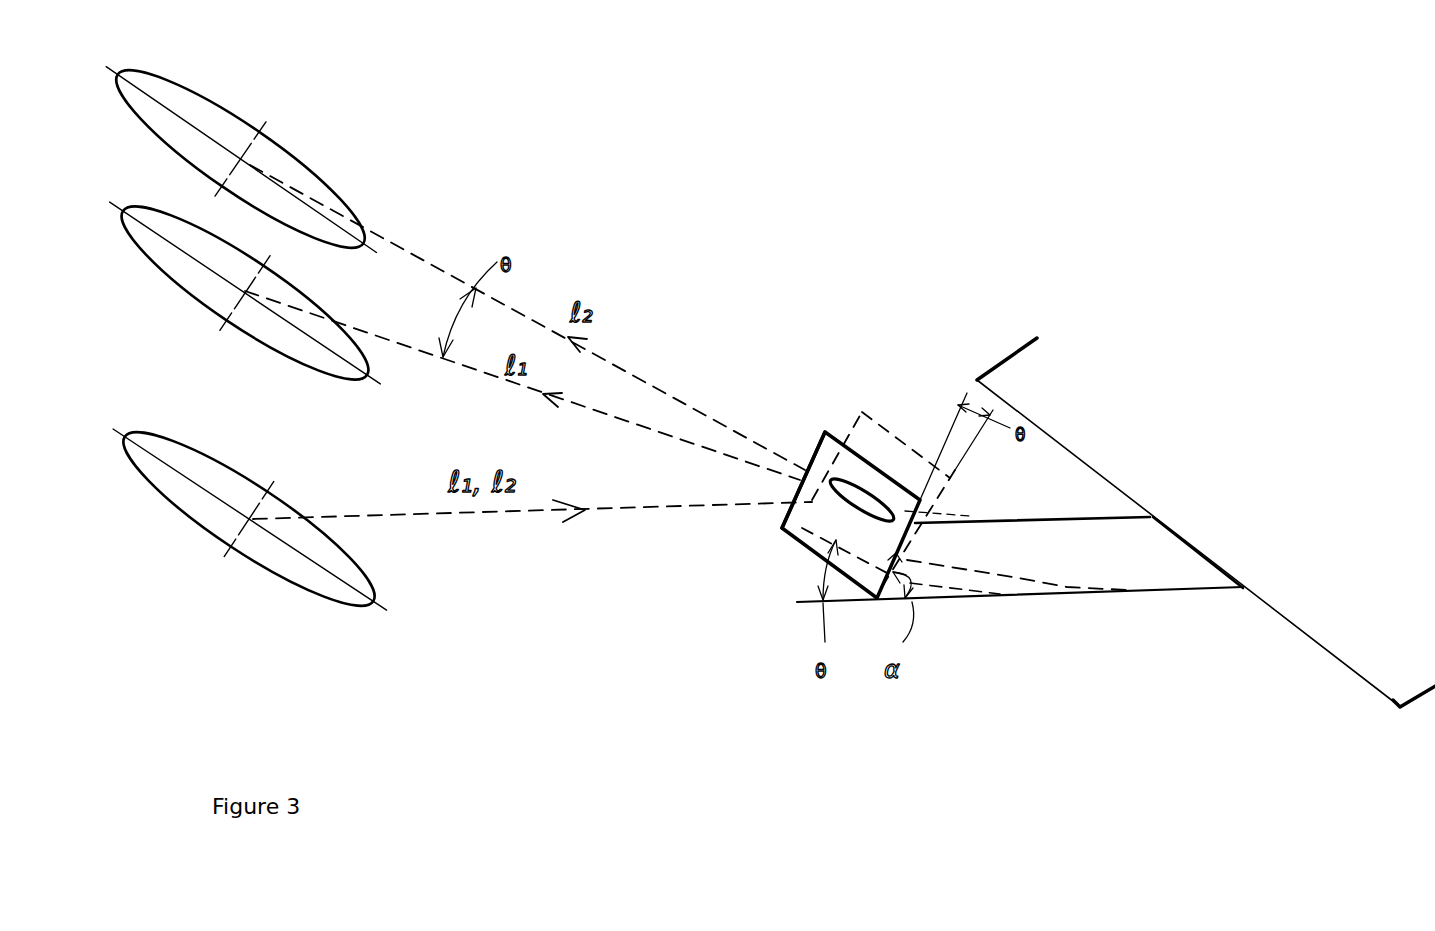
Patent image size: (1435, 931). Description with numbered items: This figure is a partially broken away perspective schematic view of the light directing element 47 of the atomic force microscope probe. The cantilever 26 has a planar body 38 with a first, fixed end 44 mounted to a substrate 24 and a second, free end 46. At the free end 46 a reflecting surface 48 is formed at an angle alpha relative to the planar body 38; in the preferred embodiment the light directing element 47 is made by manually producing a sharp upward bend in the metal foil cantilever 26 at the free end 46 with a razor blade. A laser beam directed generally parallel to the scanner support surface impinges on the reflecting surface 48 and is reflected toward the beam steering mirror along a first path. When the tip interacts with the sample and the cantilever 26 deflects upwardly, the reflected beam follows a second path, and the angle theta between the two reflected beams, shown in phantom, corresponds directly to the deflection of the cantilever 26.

The substrate 24 is at (1015, 405).
The cantilever 26 is at (1075, 620).
The planar body 38 is at (1080, 563).
The fixed end 44 is at (1230, 607).
The free end 46 is at (870, 433).
The light directing element 47 is at (790, 552).
The reflecting surface 48 is at (800, 508).